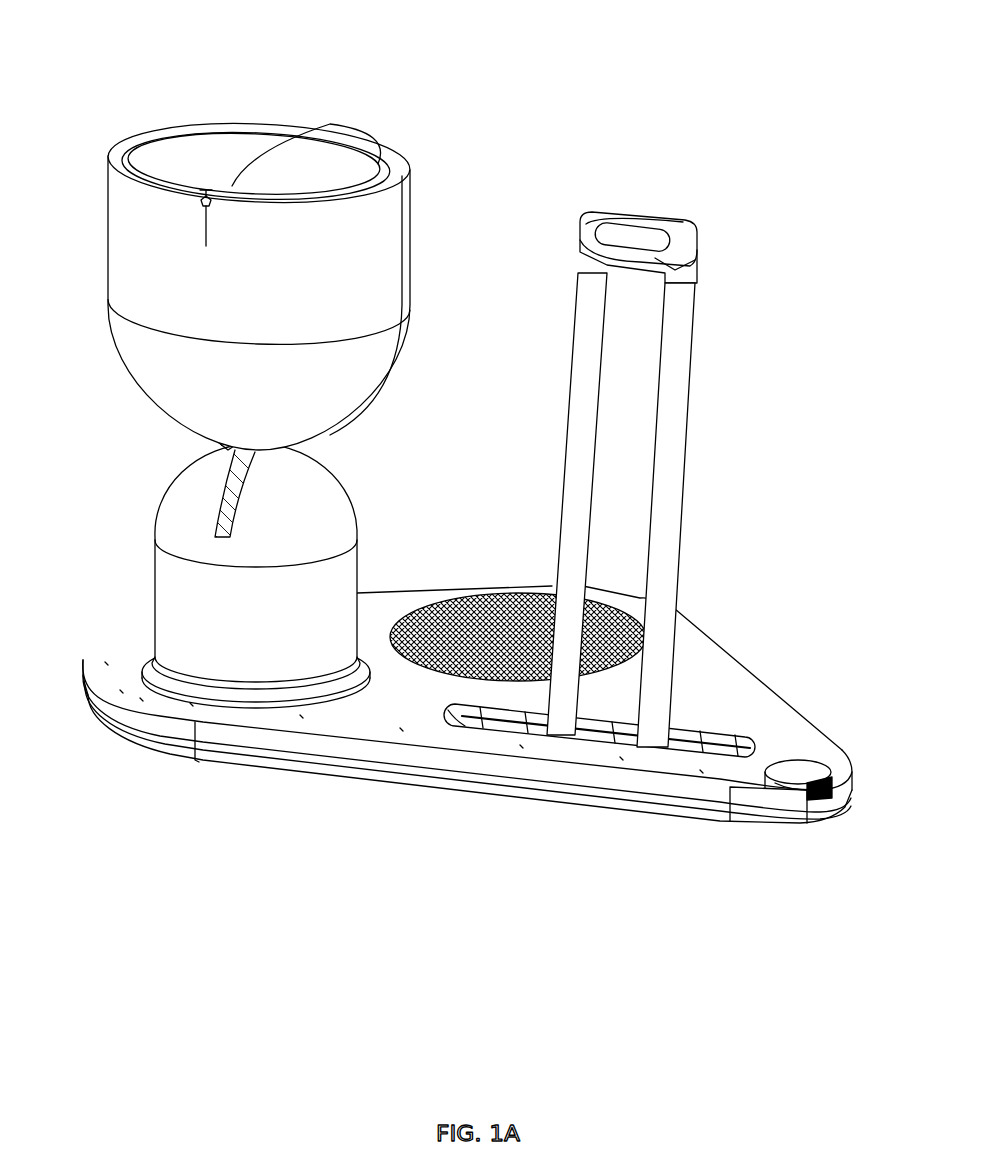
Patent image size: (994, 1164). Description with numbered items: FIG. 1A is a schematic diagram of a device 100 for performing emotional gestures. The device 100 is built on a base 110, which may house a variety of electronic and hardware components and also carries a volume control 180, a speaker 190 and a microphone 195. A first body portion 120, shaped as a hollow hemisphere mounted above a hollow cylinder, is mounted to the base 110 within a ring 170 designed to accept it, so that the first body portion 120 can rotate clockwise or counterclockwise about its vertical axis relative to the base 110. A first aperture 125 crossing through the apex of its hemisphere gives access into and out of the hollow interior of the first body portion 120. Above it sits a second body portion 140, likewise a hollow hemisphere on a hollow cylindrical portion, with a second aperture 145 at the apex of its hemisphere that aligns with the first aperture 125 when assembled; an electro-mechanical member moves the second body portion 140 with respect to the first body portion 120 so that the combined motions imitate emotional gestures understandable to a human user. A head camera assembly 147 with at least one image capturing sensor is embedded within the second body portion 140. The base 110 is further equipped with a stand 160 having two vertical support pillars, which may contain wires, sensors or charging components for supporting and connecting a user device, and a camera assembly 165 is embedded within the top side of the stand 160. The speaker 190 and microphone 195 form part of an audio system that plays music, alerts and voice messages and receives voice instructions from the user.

The device 100 is at (759, 97).
The base 110 is at (757, 703).
The first body portion 120 is at (172, 527).
The first aperture 125 is at (228, 472).
The second body portion 140 is at (377, 243).
The second aperture 145 is at (210, 435).
The head camera assembly 147 is at (204, 192).
The stand 160 is at (687, 398).
The camera assembly 165 is at (679, 242).
The ring 170 is at (150, 663).
The volume control 180 is at (813, 775).
The speaker 190 is at (500, 600).
The microphone 195 is at (425, 712).